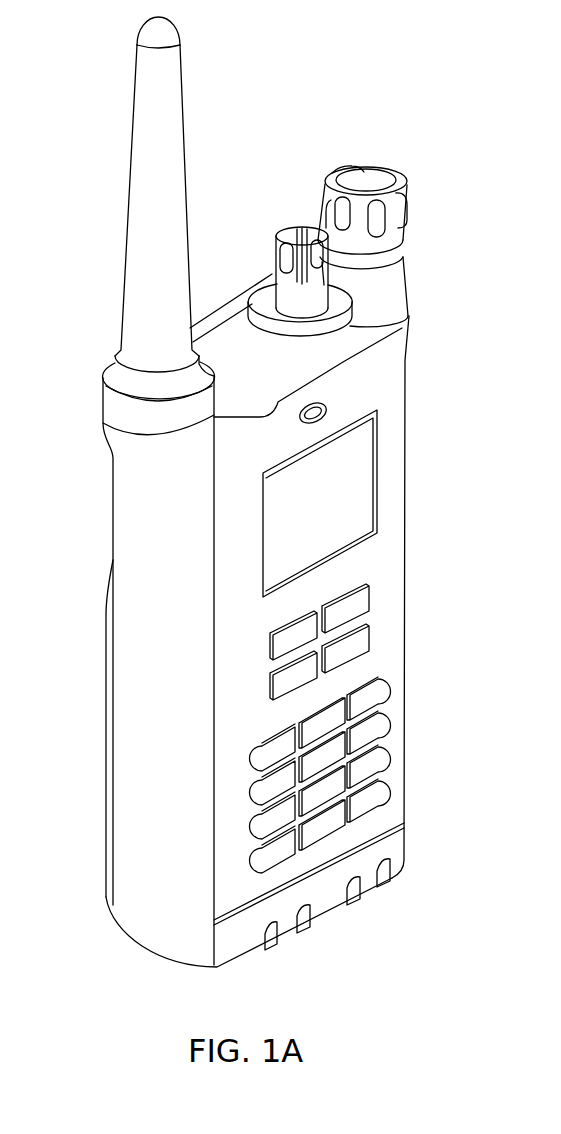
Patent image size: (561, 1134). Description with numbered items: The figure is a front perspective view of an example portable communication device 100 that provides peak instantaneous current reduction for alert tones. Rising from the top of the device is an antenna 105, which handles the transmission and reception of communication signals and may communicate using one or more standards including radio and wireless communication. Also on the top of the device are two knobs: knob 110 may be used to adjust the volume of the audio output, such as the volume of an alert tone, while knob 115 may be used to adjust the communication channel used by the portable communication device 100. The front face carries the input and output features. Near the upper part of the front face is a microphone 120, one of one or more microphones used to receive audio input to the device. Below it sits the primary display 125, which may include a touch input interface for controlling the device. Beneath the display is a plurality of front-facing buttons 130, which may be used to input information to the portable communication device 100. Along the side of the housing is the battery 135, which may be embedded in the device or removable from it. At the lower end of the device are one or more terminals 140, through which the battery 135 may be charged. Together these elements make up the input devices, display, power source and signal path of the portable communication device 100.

The portable communication device 100 is at (343, 67).
The antenna 105 is at (138, 208).
The knob 110 is at (383, 184).
The knob 115 is at (290, 231).
The microphone 120 is at (330, 407).
The primary display 125 is at (358, 492).
The front-facing buttons 130 is at (420, 582).
The battery 135 is at (110, 745).
The terminals 140 is at (402, 890).